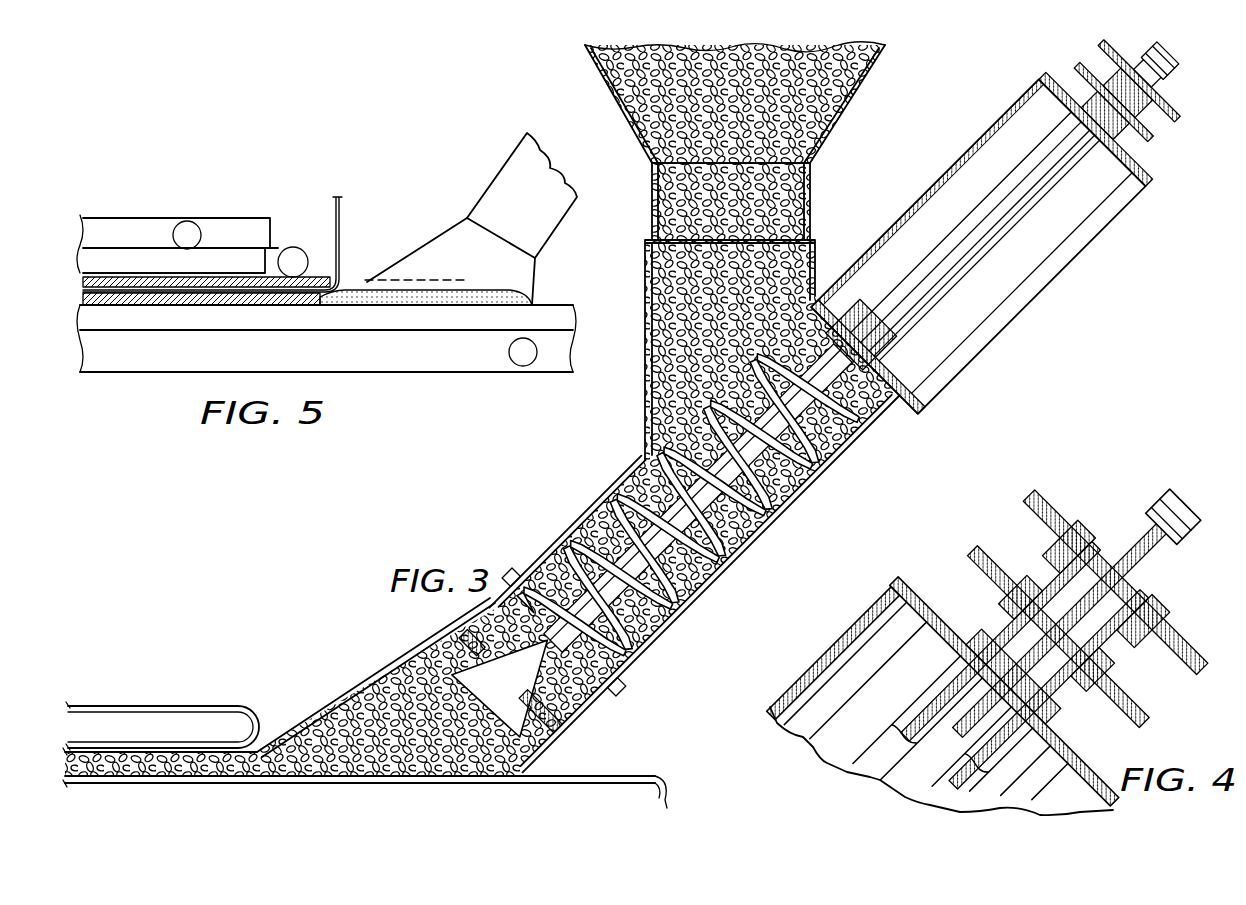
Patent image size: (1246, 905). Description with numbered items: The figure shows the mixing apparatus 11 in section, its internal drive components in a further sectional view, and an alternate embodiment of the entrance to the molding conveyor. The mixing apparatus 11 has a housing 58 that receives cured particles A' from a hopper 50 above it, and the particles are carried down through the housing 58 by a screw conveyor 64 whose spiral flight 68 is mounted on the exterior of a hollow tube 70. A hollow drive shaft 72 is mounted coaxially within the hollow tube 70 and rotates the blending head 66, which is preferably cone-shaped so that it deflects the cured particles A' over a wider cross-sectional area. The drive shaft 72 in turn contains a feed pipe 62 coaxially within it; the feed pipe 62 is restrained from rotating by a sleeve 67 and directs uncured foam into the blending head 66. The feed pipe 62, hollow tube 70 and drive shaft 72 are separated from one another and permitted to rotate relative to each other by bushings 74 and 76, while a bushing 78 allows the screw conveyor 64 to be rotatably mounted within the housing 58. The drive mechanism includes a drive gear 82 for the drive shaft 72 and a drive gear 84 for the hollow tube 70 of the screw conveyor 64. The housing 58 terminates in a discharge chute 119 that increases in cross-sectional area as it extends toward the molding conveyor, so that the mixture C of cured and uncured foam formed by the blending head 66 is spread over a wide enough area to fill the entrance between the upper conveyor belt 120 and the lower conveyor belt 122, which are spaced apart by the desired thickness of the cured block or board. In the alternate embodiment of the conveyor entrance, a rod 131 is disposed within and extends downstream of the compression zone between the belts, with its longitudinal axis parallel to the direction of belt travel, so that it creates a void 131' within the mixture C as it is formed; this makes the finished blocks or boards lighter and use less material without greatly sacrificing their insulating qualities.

In FIG. 3, the mixing apparatus 11 is at (980, 402).
In FIG. 3, the hopper 50 is at (858, 85).
In FIG. 3, the housing 58 is at (853, 447).
In FIG. 5, the housing 58 is at (497, 193).
In FIG. 4, the feed pipe 62 is at (1120, 554).
In FIG. 3, the screw conveyor 64 is at (663, 612).
In FIG. 3, the blending head 66 is at (514, 691).
In FIG. 4, the sleeve 67 is at (1150, 525).
In FIG. 3, the spiral flight 68 is at (715, 587).
In FIG. 3, the hollow tube 70 is at (770, 515).
In FIG. 4, the drive shaft 72 is at (1058, 603).
In FIG. 4, the bushing 74 is at (1128, 594).
In FIG. 4, the bushing 76 is at (1095, 655).
In FIG. 4, the bushing 78 is at (1065, 715).
In FIG. 4, the drive gear 82 is at (1050, 512).
In FIG. 4, the drive gear 84 is at (1000, 568).
In FIG. 3, the discharge chute 119 is at (375, 675).
In FIG. 5, the discharge chute 119 is at (433, 253).
In FIG. 3, the upper conveyor belt 120 is at (196, 705).
In FIG. 5, the upper conveyor belt 120 is at (279, 247).
In FIG. 3, the lower conveyor belt 122 is at (205, 785).
In FIG. 5, the lower conveyor belt 122 is at (220, 310).
In FIG. 5, the rod 131 is at (241, 230).
In FIG. 5, the void 131' is at (206, 247).
In FIG. 3, the cured particles A' is at (634, 280).
In FIG. 3, the mixture C is at (255, 748).
In FIG. 5, the mixture C is at (352, 282).